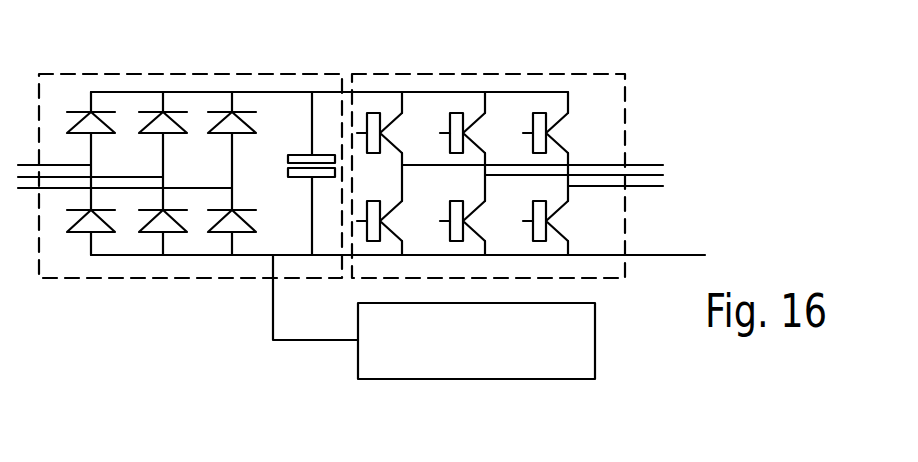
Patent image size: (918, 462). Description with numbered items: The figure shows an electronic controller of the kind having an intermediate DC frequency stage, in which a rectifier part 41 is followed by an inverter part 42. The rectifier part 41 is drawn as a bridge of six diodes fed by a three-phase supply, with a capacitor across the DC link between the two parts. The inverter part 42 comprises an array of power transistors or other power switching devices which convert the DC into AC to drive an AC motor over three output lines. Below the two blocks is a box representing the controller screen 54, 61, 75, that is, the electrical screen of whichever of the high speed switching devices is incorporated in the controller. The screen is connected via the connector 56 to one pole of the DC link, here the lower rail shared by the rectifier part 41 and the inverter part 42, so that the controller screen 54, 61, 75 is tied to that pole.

The rectifier part 41 is at (132, 73).
The inverter part 42 is at (527, 72).
The connector 56 is at (273, 323).
The controller screen 54 is at (548, 364).
The controller screen 61 is at (548, 364).
The controller screen 75 is at (595, 350).